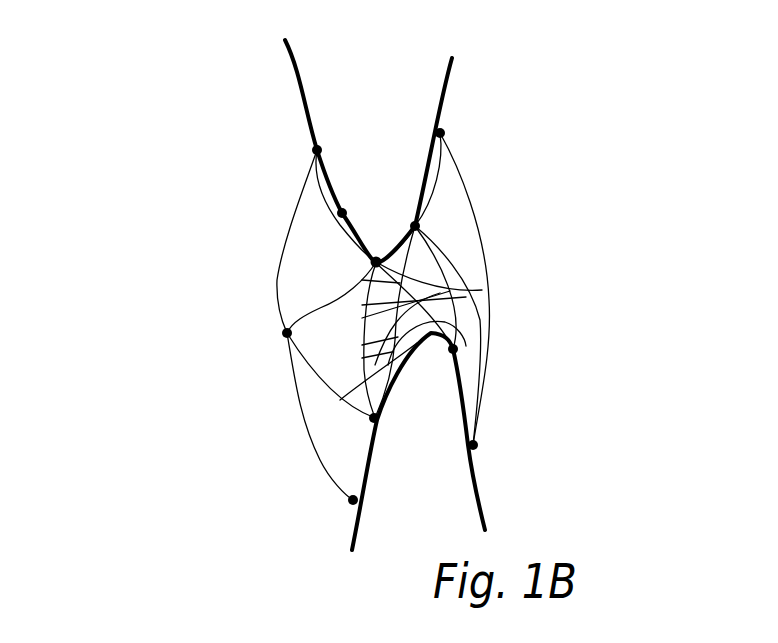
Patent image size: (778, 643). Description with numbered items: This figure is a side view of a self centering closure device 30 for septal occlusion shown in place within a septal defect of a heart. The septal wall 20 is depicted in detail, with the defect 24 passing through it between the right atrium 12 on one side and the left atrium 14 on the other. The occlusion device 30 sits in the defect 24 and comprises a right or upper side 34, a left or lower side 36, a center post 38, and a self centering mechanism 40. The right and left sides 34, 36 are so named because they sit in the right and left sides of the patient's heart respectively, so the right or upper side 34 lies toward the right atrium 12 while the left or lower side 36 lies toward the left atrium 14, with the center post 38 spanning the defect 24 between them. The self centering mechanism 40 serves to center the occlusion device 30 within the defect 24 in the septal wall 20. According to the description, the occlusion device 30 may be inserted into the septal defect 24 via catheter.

The right atrium 12 is at (135, 342).
The left atrium 14 is at (630, 321).
The septal wall 20 is at (450, 153).
The defect 24 is at (380, 241).
The self centering closure device 30 is at (274, 189).
The right or upper side 34 is at (261, 257).
The left or lower side 36 is at (484, 249).
The center post 38 is at (340, 400).
The self centering mechanism 40 is at (419, 339).